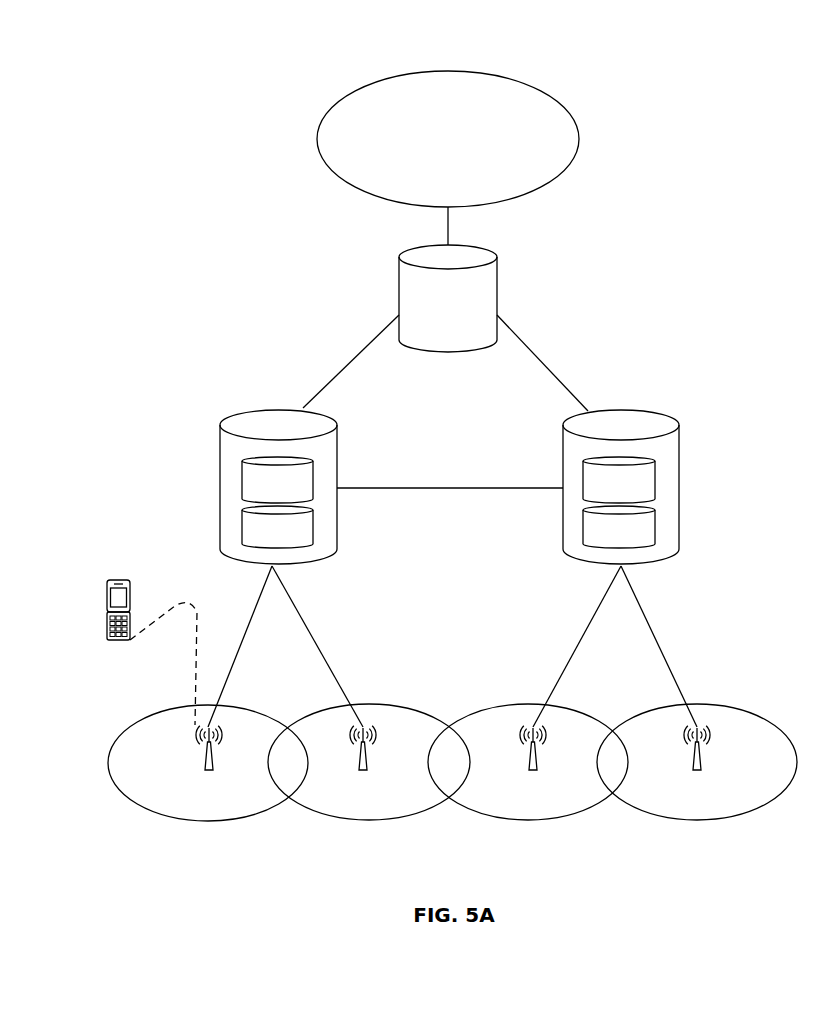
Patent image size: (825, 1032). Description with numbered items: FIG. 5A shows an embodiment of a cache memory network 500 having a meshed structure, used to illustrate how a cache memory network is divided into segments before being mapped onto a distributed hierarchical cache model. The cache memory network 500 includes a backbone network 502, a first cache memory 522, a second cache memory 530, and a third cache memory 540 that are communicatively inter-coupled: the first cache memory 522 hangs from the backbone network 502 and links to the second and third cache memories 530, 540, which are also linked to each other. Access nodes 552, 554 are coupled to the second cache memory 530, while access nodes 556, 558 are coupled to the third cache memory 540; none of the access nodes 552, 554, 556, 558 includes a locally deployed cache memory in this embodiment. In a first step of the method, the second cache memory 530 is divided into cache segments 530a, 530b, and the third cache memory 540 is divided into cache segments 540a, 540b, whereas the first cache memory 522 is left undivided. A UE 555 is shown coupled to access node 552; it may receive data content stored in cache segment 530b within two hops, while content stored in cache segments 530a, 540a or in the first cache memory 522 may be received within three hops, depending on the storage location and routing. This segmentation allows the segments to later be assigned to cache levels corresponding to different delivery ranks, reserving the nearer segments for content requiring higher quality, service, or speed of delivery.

The cache memory network 500 is at (238, 46).
The backbone network 502 is at (553, 82).
The first cache memory 522 is at (448, 298).
The second cache memory 530 is at (248, 418).
The cache segment 530a is at (277, 480).
The cache segment 530b is at (277, 527).
The third cache memory 540 is at (622, 408).
The cache segment 540a is at (619, 480).
The cache segment 540b is at (619, 527).
The access node 552 is at (208, 763).
The access node 554 is at (369, 762).
The access node 556 is at (528, 762).
The access node 558 is at (697, 762).
The UE 555 is at (146, 652).